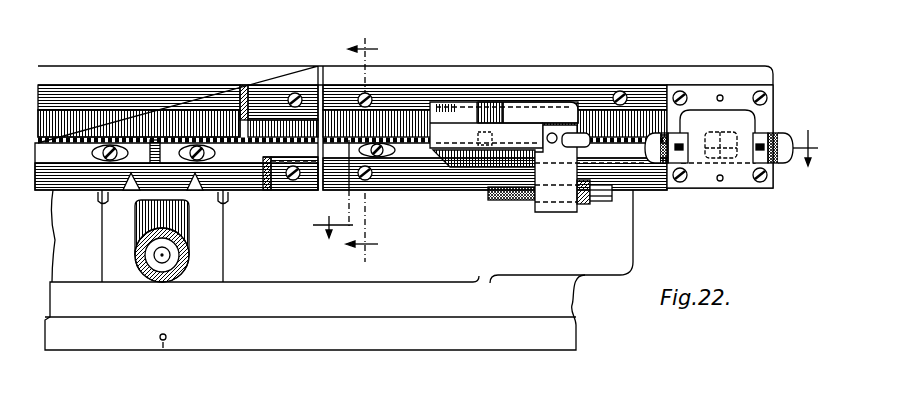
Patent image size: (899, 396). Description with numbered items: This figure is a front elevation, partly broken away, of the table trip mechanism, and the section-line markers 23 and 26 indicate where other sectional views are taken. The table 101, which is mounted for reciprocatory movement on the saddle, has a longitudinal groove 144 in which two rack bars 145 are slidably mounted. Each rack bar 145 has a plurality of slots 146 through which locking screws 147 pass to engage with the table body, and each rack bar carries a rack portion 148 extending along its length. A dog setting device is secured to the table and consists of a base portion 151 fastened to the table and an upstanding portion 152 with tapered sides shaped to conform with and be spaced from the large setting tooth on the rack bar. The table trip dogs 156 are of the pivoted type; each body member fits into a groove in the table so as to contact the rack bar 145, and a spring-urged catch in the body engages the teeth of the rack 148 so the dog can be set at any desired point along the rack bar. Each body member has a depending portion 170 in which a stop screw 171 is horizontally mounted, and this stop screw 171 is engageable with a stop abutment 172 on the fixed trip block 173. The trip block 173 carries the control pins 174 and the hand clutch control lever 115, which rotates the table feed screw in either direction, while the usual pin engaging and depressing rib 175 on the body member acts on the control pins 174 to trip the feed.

The slots 146 is at (95, 130).
The locking screws 147 is at (115, 141).
The longitudinal groove 144 is at (155, 138).
The rack bars 145 is at (238, 155).
The rack portion 148 is at (417, 120).
The table trip dogs 156 is at (540, 110).
The table 101 is at (703, 67).
The upstanding portion 152 is at (727, 127).
The base portion 151 is at (757, 127).
The hand clutch control lever 115 is at (150, 221).
The fixed trip block 173 is at (122, 245).
The stop abutment 172 is at (227, 197).
The control pins 174 is at (195, 190).
The pin engaging and depressing rib 175 is at (465, 170).
The stop screw 171 is at (513, 200).
The depending portion 170 is at (560, 190).
The section line 23 is at (563, 176).
The section line 26 is at (364, 148).